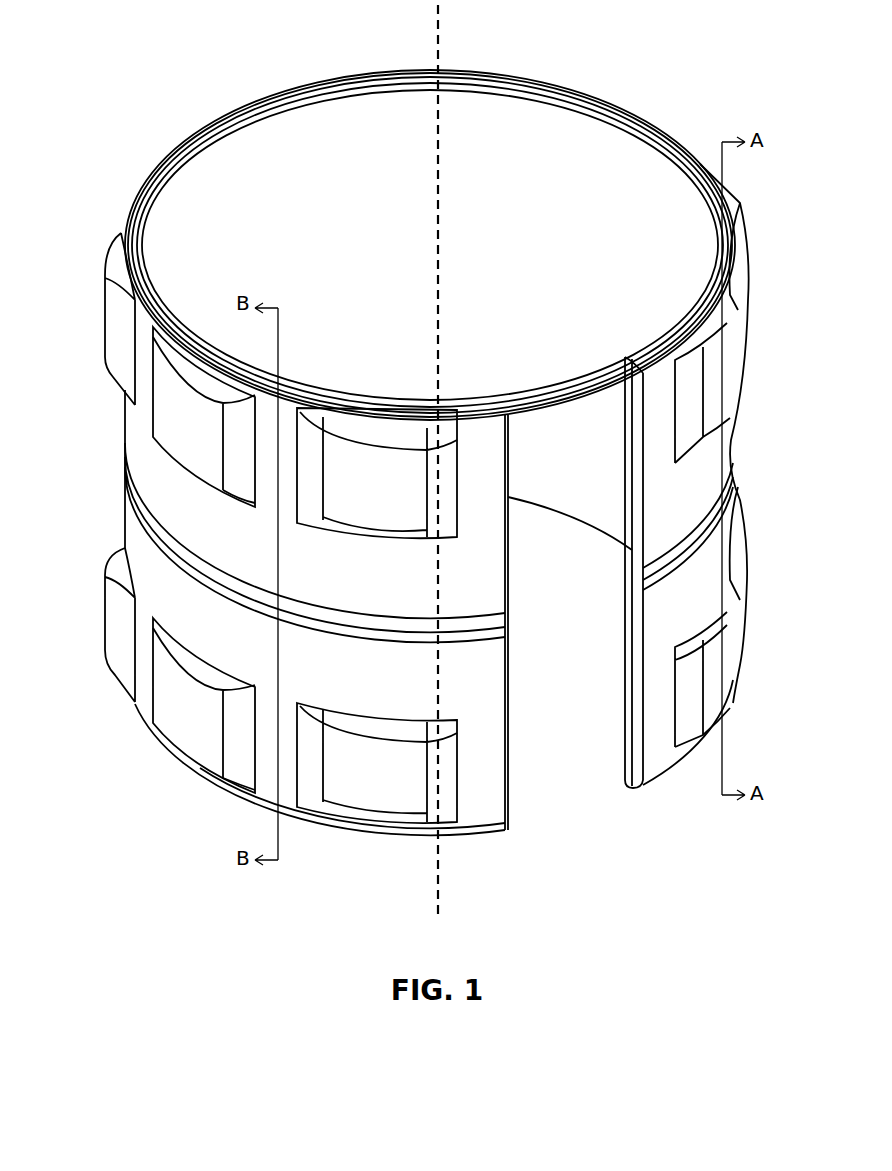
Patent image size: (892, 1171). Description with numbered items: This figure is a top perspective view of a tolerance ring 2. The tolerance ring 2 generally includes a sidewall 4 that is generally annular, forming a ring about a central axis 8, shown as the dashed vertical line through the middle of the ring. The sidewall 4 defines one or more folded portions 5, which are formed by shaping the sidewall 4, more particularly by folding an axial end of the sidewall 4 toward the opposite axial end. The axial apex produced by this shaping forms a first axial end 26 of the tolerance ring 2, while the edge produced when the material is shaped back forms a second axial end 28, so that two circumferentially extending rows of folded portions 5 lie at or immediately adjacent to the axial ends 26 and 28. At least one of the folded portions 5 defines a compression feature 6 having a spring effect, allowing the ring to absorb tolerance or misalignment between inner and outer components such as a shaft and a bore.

The tolerance ring 2 is at (108, 88).
The sidewall 4 is at (735, 433).
The folded portion 5 is at (692, 514).
The compression feature 6 is at (748, 345).
The central axis 8 is at (442, 25).
The first axial end 26 is at (700, 162).
The second axial end 28 is at (655, 787).